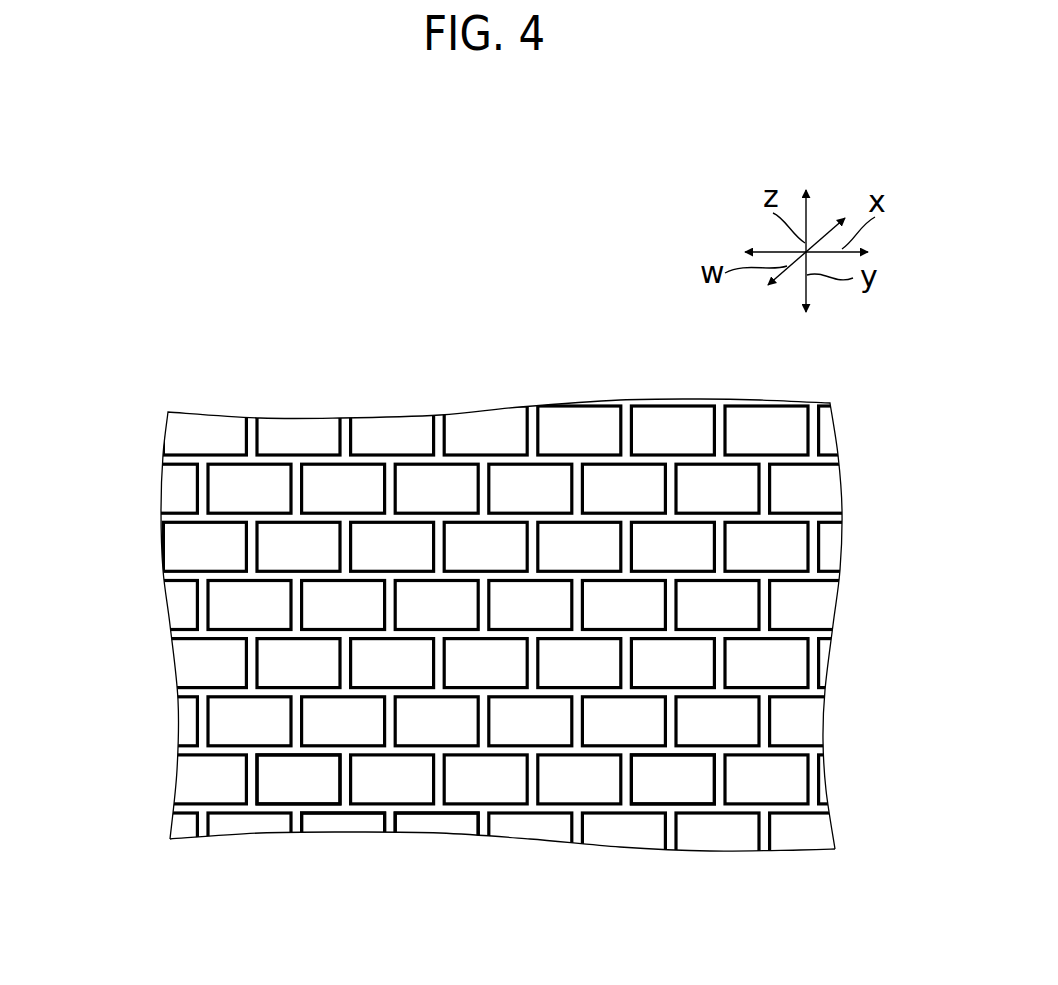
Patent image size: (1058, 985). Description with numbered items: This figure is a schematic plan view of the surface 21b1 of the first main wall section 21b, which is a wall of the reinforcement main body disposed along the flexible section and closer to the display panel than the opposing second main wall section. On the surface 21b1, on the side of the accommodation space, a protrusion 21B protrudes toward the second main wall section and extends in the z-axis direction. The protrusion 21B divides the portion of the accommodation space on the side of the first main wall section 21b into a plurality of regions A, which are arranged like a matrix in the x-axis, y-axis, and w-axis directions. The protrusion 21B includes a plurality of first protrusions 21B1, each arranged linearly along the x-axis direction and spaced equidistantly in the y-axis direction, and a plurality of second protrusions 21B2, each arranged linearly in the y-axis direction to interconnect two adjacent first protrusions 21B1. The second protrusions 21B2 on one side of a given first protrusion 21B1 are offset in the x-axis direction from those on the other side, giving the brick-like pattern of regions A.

The first main wall section 21b is at (826, 733).
The surface 21b1 is at (552, 833).
The protrusion 21B is at (398, 821).
The first protrusion 21B1 is at (320, 815).
The second protrusion 21B2 is at (247, 777).
The region A is at (684, 789).